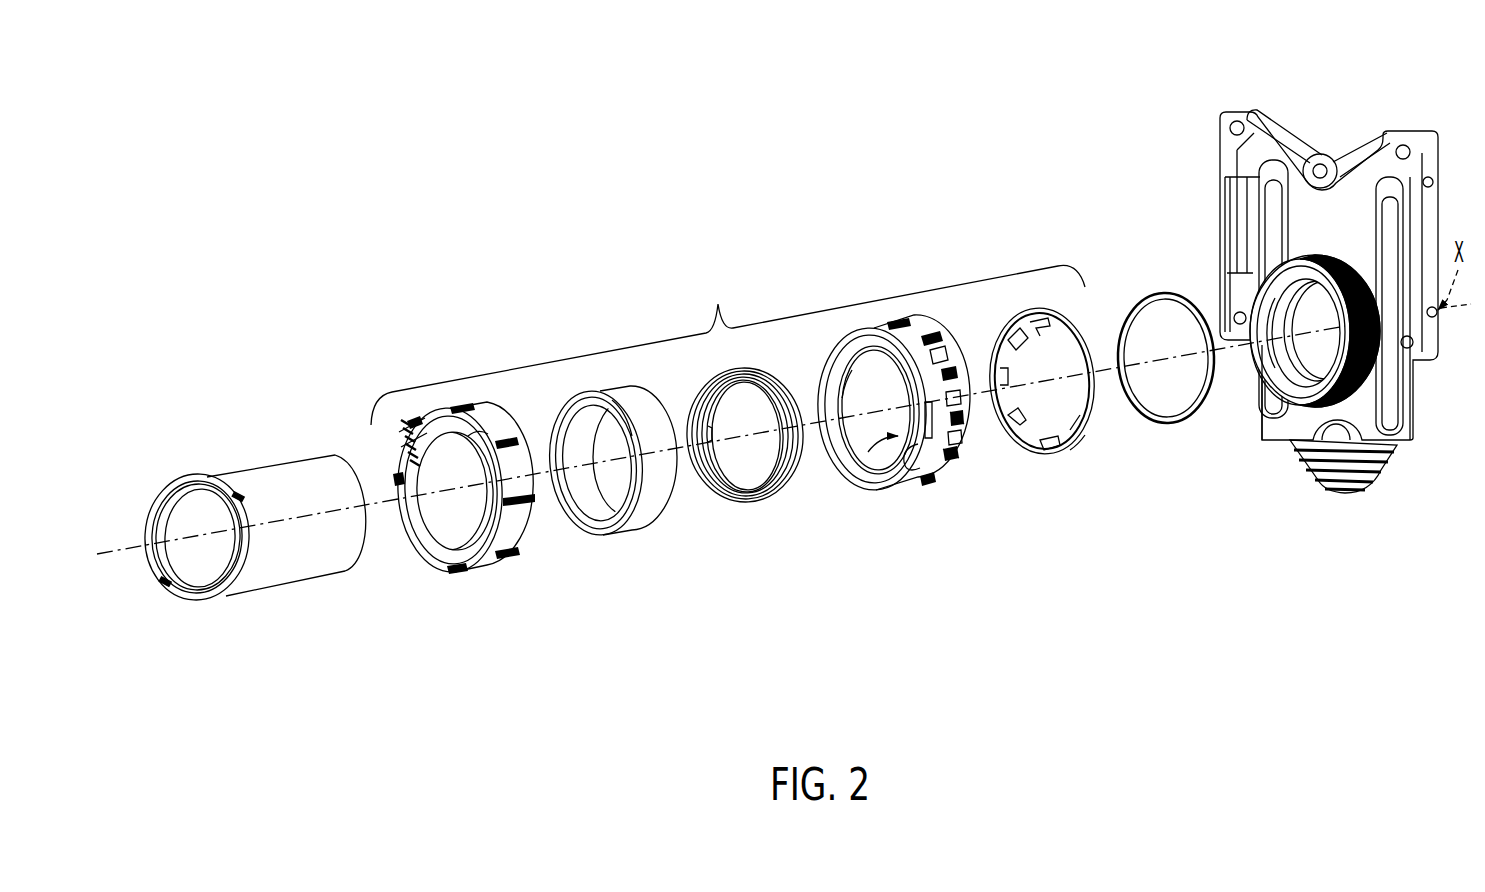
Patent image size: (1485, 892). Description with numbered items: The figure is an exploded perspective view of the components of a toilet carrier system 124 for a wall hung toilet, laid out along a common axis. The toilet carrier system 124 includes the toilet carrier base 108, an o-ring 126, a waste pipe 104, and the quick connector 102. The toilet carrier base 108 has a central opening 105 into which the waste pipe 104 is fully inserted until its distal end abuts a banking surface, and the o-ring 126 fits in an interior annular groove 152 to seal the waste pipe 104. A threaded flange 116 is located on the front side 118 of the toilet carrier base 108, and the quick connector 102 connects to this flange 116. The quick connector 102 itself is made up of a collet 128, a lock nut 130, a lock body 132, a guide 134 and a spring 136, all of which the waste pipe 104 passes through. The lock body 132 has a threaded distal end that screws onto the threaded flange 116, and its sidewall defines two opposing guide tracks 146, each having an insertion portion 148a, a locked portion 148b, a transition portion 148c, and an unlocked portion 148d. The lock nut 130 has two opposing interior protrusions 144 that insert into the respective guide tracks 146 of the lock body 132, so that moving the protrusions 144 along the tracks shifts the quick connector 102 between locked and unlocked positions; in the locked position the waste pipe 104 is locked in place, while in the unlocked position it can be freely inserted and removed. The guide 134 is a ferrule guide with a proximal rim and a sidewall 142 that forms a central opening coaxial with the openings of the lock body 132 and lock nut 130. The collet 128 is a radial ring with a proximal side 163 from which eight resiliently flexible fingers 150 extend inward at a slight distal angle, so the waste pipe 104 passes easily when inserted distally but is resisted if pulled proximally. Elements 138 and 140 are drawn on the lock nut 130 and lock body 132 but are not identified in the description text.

The quick connector 102 is at (728, 345).
The waste pipe 104 is at (307, 580).
The central opening 105 is at (1334, 338).
The toilet carrier base 108 is at (1262, 112).
The flange 116 is at (1368, 377).
The front side 118 is at (1358, 175).
The toilet carrier system 124 is at (556, 239).
The o-ring 126 is at (1172, 425).
The collet 128 is at (1055, 452).
The lock nut 130 is at (484, 568).
The lock body 132 is at (893, 490).
The guide 134 is at (636, 518).
The spring 136 is at (765, 503).
The rim tab 138 is at (487, 438).
The inner surface of locking ring 140 is at (852, 368).
The sidewall 142 is at (632, 408).
The interior protrusions 144 is at (404, 452).
The guide track 146 is at (868, 452).
The insertion portion 148a is at (908, 478).
The locked portion 148b is at (918, 430).
The transition portion 148c is at (952, 460).
The unlocked portion 148d is at (962, 432).
The resiliently flexible fingers 150 is at (1046, 334).
The interior annular groove 152 is at (1287, 324).
The proximal side 163 is at (1088, 443).